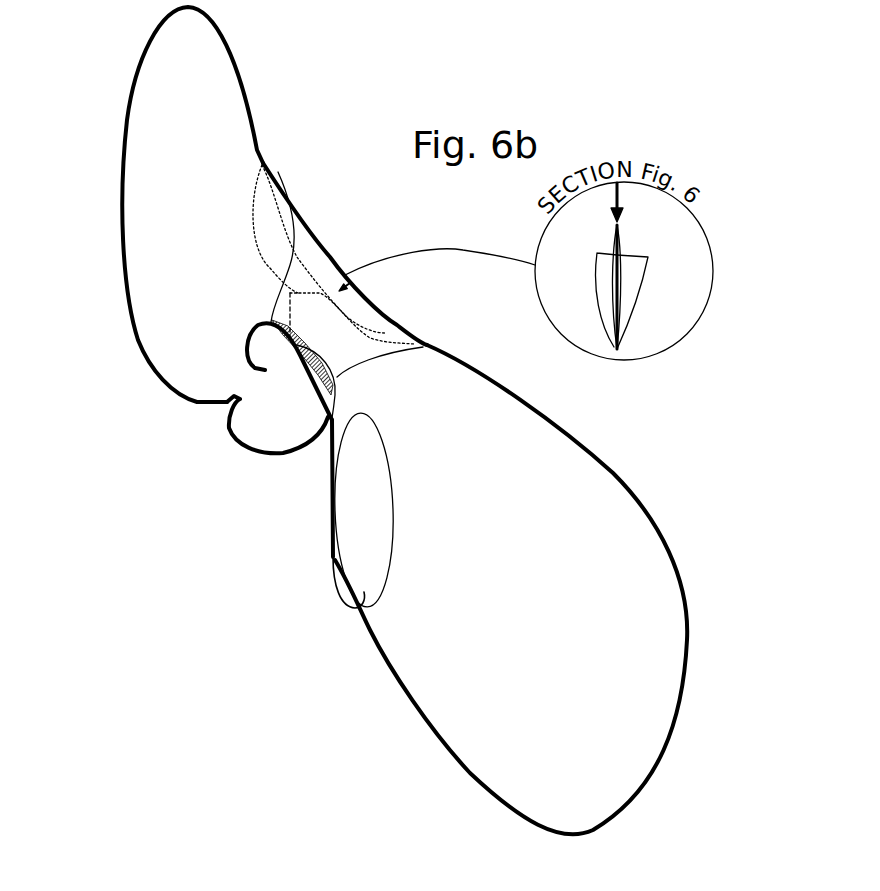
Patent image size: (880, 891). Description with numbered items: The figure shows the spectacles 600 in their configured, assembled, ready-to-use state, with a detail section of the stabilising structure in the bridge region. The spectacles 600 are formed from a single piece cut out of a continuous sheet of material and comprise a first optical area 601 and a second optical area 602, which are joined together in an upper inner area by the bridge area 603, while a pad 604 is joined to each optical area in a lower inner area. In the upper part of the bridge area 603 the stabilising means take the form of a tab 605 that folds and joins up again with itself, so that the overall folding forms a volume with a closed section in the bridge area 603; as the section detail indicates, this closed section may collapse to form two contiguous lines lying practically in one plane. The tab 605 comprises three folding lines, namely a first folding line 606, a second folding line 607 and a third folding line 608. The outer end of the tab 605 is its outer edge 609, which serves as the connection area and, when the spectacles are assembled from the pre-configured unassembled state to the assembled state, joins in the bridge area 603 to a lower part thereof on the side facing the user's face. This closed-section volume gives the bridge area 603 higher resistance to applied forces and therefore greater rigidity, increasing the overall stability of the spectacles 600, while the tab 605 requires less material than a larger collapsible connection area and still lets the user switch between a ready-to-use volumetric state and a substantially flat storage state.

The spectacles 600 is at (136, 374).
The first optical area 601 is at (592, 495).
The second optical area 602 is at (148, 280).
The bridge area 603 is at (300, 322).
The pads 604 is at (277, 428).
The tab 605 is at (345, 251).
The first folding line 606 is at (348, 333).
The second folding line 607 is at (340, 267).
The third folding line 608 is at (278, 218).
The outer edge 609 is at (295, 348).